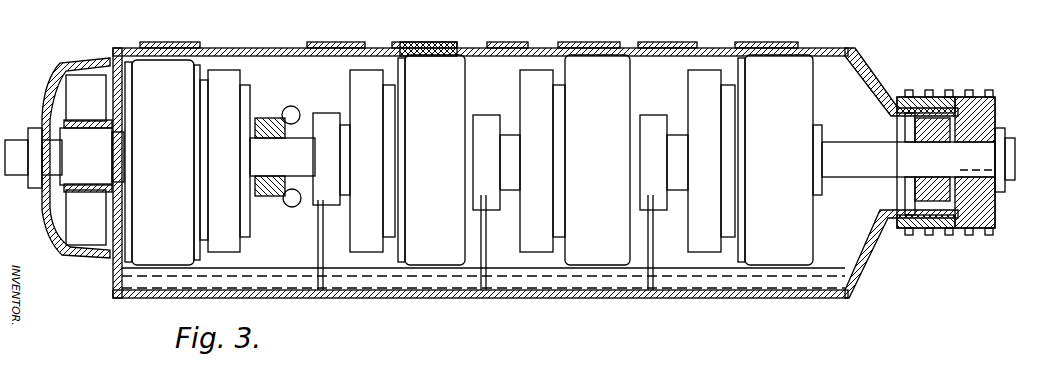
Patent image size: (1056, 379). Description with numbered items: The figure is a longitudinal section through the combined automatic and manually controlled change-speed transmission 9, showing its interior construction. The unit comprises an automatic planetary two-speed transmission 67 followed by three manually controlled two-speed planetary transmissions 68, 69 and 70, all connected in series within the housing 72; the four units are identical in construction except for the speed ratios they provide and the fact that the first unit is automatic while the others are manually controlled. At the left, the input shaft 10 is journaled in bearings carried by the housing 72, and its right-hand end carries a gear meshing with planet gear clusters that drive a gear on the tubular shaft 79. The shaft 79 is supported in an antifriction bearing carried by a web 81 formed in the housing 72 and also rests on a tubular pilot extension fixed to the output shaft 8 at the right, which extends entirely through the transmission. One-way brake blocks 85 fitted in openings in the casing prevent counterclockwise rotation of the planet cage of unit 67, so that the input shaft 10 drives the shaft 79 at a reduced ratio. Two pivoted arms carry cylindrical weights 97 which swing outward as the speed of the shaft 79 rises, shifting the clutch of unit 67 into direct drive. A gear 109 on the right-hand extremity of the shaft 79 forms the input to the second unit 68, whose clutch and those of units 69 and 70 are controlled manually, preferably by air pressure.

The output shaft 8 is at (866, 125).
The transmission 9 is at (716, 40).
The input shaft 10 is at (113, 153).
The automatic planetary two-speed transmission 67 is at (201, 57).
The manually controlled two-speed planetary transmission 68 is at (447, 74).
The manually controlled two-speed planetary transmission 69 is at (608, 71).
The manually controlled two-speed planetary transmission 70 is at (799, 72).
The housing 72 is at (270, 48).
The tubular shaft 79 is at (292, 166).
The web 81 is at (318, 245).
The one-way brake blocks 85 is at (172, 78).
The cylindrical weight 97 is at (298, 108).
The gear 109 is at (437, 30).